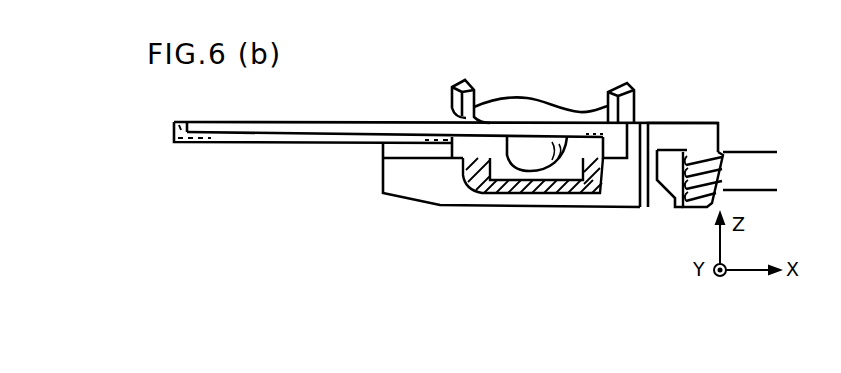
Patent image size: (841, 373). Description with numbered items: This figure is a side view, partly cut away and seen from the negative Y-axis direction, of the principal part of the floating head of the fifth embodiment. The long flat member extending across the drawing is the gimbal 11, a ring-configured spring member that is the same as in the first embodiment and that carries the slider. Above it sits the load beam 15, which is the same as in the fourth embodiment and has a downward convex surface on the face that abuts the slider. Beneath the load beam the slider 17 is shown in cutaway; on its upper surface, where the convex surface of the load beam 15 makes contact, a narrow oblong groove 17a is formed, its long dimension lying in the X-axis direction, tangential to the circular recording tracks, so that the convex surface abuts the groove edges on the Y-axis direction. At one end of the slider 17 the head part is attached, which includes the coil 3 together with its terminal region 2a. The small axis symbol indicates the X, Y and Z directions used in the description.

The gimbal 11 is at (305, 143).
The load beam 15 is at (522, 108).
The slider 17 is at (443, 188).
The groove 17a is at (518, 173).
The coil 3 is at (710, 150).
The support member 2a is at (720, 197).